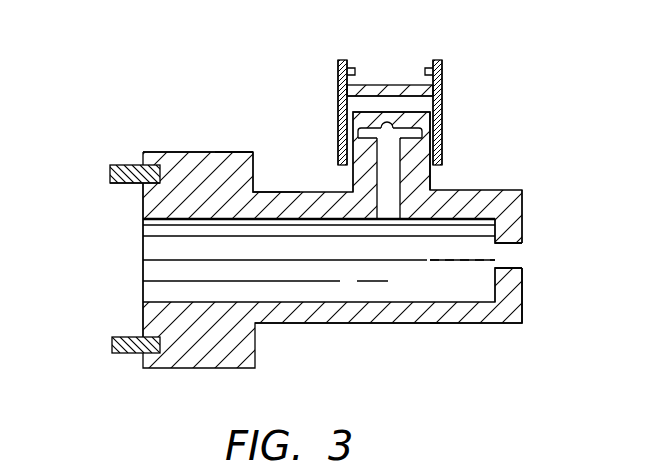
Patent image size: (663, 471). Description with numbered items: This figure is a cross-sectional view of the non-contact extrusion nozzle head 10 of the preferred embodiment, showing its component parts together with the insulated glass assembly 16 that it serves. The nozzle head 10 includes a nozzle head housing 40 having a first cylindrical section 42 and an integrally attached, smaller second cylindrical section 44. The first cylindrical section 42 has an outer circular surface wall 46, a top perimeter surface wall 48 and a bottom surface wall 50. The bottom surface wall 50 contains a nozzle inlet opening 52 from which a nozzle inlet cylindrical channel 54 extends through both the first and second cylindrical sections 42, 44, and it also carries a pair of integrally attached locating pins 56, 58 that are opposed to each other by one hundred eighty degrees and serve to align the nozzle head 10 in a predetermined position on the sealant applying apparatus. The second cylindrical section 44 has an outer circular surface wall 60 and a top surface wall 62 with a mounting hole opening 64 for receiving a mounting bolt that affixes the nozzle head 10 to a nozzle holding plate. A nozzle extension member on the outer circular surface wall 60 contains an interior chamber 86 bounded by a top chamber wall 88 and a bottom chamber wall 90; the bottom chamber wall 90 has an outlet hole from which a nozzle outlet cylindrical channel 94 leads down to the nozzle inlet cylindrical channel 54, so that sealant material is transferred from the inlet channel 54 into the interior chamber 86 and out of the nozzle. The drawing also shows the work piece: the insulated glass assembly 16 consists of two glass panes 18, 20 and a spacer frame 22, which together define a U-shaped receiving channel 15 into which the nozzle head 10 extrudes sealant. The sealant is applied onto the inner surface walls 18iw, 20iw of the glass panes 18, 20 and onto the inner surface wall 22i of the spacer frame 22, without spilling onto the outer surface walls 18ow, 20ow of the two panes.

The non-contact extrusion nozzle head 10 is at (561, 170).
The U-shaped receiving channel 15 is at (440, 60).
The insulated glass assembly 16 is at (336, 99).
The glass pane 18 is at (338, 139).
The outer surface wall of glass pane 18ow is at (338, 65).
The inner surface wall of glass pane 18iw is at (350, 176).
The glass pane 20 is at (442, 130).
The outer surface wall of glass pane 20ow is at (442, 92).
The inner surface wall of glass pane 20iw is at (434, 149).
The spacer frame 22 is at (389, 85).
The inner surface wall of spacer frame 22i is at (368, 96).
The nozzle head housing 40 is at (221, 375).
The first cylindrical section 42 is at (212, 152).
The second cylindrical section 44 is at (350, 326).
The outer circular surface wall 46 is at (242, 152).
The top perimeter surface wall 48 is at (254, 167).
The bottom surface wall 50 is at (140, 184).
The nozzle inlet opening 52 is at (142, 247).
The nozzle inlet cylindrical channel 54 is at (174, 270).
The locating pin 56 is at (121, 165).
The locating pin 58 is at (123, 337).
The outer circular surface wall 60 is at (442, 326).
The top surface wall 62 is at (523, 217).
The mounting hole opening 64 is at (502, 257).
The interior chamber 86 is at (442, 105).
The top chamber wall 88 is at (393, 123).
The bottom chamber wall 90 is at (414, 188).
The nozzle outlet cylindrical channel 94 is at (388, 192).